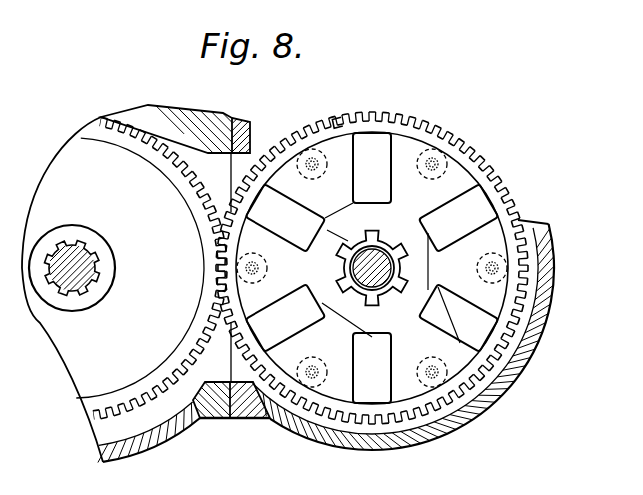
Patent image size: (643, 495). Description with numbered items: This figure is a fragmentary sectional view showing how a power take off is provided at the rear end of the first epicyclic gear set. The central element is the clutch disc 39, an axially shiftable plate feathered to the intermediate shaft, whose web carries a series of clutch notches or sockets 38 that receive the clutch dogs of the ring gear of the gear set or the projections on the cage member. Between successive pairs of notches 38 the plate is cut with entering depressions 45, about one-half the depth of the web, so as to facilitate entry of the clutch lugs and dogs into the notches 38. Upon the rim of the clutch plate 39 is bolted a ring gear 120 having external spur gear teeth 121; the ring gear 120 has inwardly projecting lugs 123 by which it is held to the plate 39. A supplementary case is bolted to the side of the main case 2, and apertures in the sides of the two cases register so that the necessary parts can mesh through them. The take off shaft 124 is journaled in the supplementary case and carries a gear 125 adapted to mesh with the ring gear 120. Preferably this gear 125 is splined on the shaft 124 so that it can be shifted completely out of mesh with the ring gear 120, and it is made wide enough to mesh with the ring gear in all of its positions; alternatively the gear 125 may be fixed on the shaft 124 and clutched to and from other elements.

The case 2 is at (506, 386).
The clutch notches or sockets 38 is at (483, 207).
The clutch disc 39 is at (463, 180).
The entering depressions 45 is at (495, 307).
The ring gear 120 is at (363, 127).
The external spur gear teeth 121 is at (334, 124).
The inwardly projecting lugs 123 is at (431, 179).
The take off shaft 124 is at (116, 315).
The gear 125 is at (99, 156).